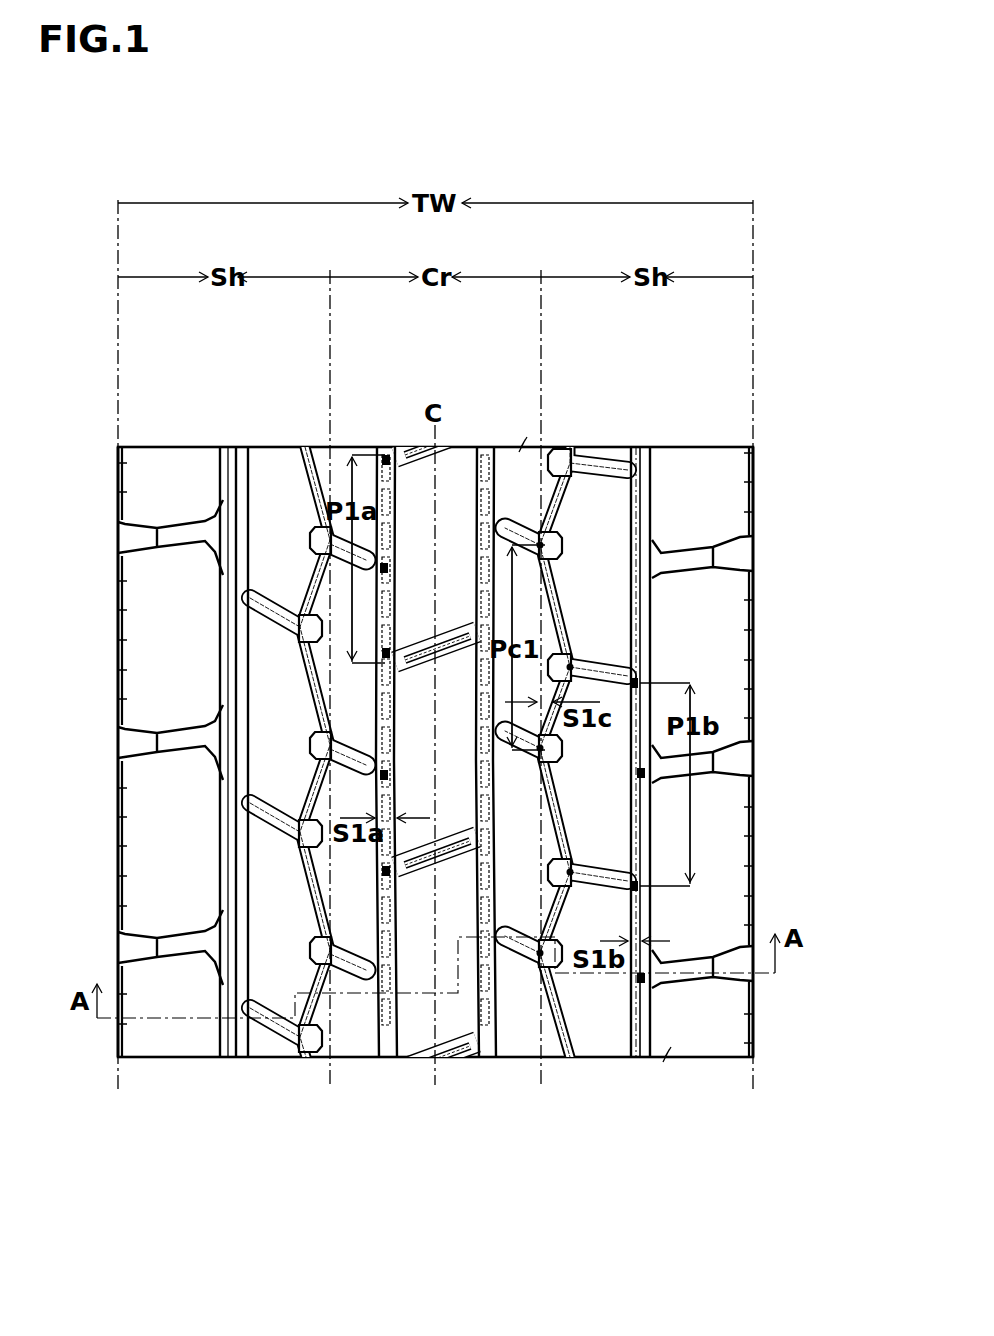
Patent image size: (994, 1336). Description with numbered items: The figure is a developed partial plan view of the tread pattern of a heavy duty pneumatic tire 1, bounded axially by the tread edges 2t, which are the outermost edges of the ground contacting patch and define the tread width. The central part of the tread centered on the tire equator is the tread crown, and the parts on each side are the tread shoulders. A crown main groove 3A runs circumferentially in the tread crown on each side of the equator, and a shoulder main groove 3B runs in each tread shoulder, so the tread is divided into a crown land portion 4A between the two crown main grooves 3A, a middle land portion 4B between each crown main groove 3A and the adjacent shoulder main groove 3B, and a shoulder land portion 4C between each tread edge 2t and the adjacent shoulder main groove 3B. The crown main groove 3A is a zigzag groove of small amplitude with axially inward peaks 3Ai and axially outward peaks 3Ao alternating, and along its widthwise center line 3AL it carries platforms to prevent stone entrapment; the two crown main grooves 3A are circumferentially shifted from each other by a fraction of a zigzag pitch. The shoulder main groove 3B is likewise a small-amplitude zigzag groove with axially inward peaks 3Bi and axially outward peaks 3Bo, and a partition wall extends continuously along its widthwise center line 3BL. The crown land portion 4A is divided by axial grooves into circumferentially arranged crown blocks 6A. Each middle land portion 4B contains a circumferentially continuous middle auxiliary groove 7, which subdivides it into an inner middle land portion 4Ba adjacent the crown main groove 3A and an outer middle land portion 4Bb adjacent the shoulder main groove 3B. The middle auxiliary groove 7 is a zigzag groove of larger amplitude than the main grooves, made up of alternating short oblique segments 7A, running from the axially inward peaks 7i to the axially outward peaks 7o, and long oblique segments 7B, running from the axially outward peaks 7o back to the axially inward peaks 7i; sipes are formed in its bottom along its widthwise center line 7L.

The heavy duty pneumatic tire 1 is at (688, 412).
The tread edges 2t is at (118, 840).
The crown main groove 3A is at (385, 460).
The axially inward peaks of crown main groove 3Ai is at (392, 457).
The axially outward peaks of crown main groove 3Ao is at (380, 568).
The widthwise center line of crown main groove 3AL is at (386, 1058).
The shoulder main groove 3B is at (223, 460).
The axially inward peaks of shoulder main groove 3Bi is at (636, 683).
The axially outward peaks of shoulder main groove 3Bo is at (642, 774).
The widthwise center line of shoulder main groove 3BL is at (641, 1060).
The crown land portion 4A is at (449, 1010).
The middle land portion 4B is at (381, 1186).
The inner middle land portion 4Ba is at (355, 1035).
The outer middle land portion 4Bb is at (286, 982).
The shoulder land portion 4C is at (190, 1024).
The crown blocks 6A is at (417, 1018).
The middle auxiliary groove 7 is at (305, 480).
The short oblique segments 7A is at (522, 534).
The long oblique segments 7B is at (577, 624).
The axially inward peaks of middle auxiliary groove 7i is at (560, 526).
The axially outward peaks of middle auxiliary groove 7o is at (556, 600).
The widthwise center line of middle auxiliary groove 7L is at (569, 1060).